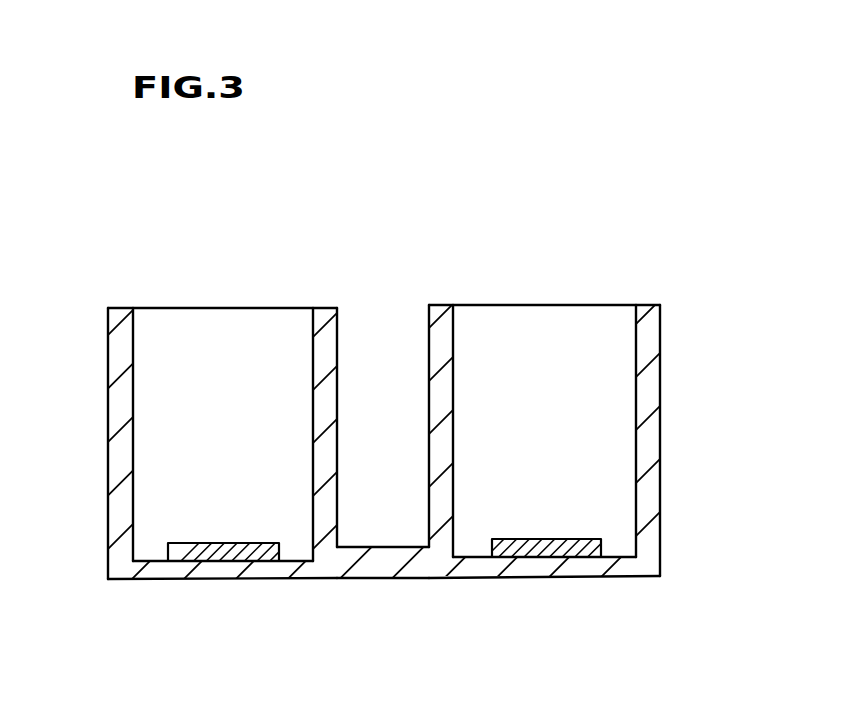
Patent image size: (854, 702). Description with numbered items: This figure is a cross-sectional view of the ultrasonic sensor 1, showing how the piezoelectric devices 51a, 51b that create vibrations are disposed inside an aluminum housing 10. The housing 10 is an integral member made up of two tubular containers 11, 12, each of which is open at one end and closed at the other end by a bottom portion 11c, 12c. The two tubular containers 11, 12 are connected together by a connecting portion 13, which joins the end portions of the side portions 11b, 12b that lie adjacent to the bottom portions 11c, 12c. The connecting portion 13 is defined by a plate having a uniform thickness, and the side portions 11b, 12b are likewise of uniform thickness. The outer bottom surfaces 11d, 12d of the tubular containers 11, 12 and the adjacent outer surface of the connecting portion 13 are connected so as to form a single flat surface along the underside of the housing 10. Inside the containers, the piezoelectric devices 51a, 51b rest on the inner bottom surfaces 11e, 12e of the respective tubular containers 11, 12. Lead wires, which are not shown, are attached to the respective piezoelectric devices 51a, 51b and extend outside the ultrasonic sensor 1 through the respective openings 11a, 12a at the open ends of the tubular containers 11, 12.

The ultrasonic sensor 1 is at (80, 184).
The housing 10 is at (688, 259).
The tubular container 11 is at (229, 292).
The opening 11a is at (165, 308).
The side portion 11b is at (122, 446).
The bottom portion 11c is at (152, 574).
The outer bottom surface 11d is at (343, 578).
The inner bottom surface 11e is at (342, 578).
The tubular container 12 is at (551, 291).
The opening 12a is at (600, 305).
The side portion 12b is at (647, 446).
The bottom portion 12c is at (621, 570).
The outer bottom surface 12d is at (520, 558).
The inner bottom surface 12e is at (478, 557).
The connecting portion 13 is at (396, 531).
The piezoelectric device 51a is at (200, 558).
The piezoelectric device 51b is at (563, 557).